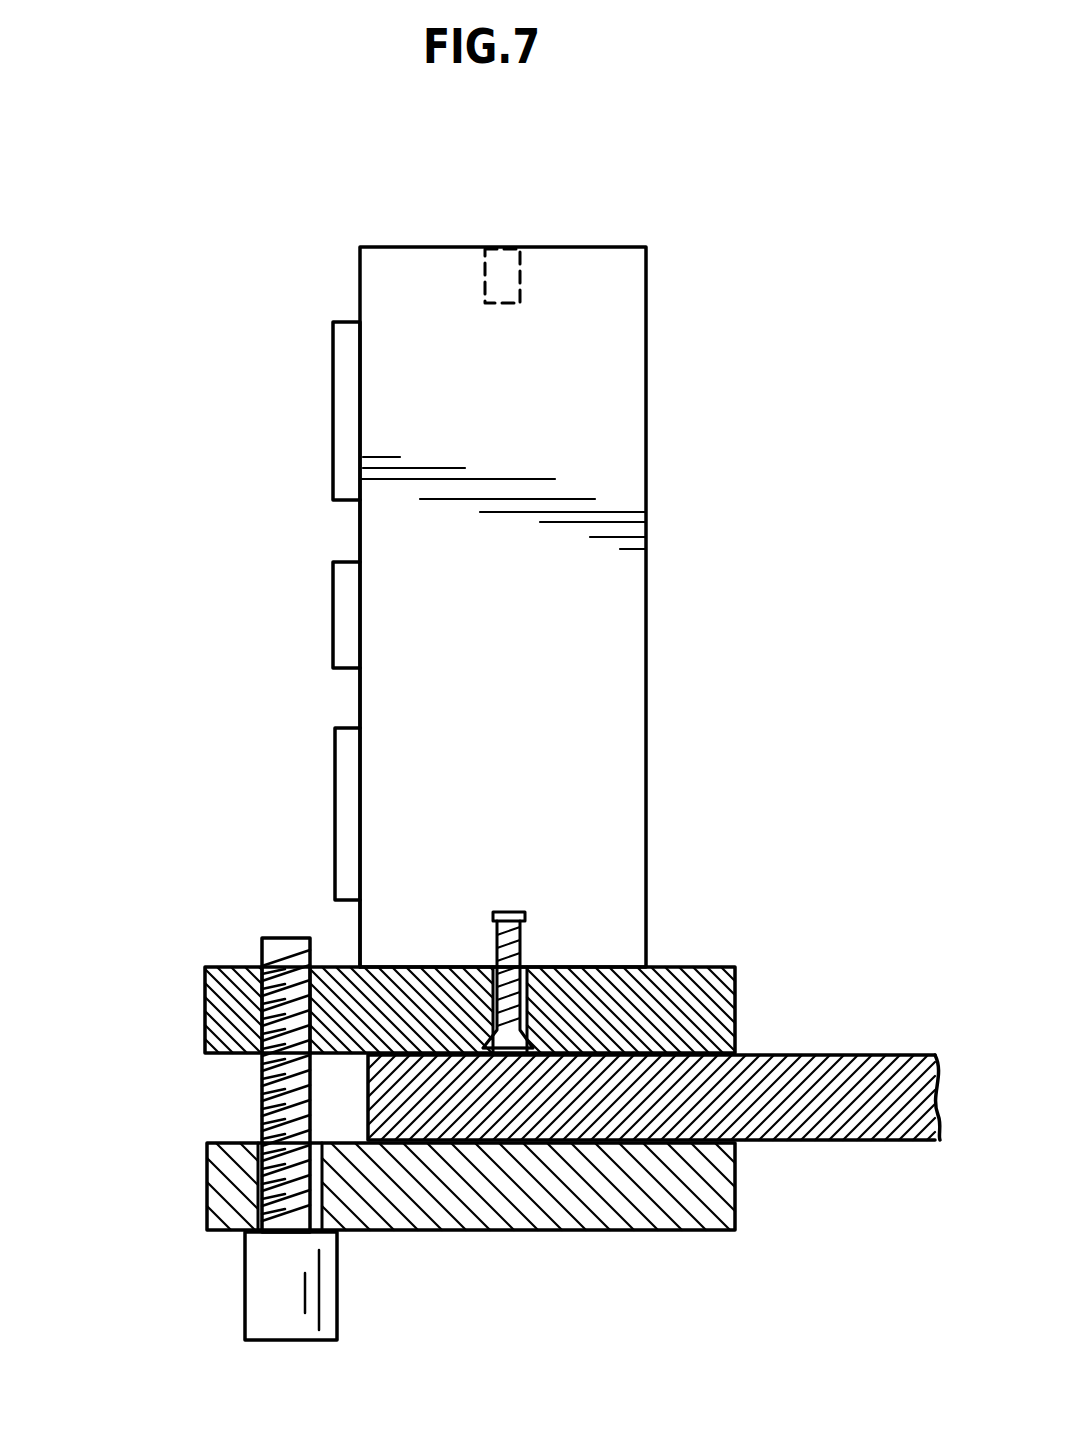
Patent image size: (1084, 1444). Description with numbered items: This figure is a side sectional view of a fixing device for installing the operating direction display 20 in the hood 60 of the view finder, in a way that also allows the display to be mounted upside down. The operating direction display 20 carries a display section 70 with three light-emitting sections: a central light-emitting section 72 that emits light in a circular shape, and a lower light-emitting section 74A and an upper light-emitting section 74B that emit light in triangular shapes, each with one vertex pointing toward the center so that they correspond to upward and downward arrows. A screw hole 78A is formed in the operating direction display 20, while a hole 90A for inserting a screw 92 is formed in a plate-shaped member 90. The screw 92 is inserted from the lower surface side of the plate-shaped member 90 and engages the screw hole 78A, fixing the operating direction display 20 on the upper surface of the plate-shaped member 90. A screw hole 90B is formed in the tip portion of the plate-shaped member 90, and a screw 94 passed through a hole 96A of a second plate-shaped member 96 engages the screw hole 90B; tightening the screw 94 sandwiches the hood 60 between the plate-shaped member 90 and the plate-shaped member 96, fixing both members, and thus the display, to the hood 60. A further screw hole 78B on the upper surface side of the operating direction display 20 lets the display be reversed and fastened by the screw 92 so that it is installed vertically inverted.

The operating direction display 20 is at (598, 630).
The hood 60 is at (870, 1115).
The display section 70 is at (360, 703).
The central light-emitting section 72 is at (333, 615).
The lower light-emitting section 74A is at (335, 818).
The upper light-emitting section 74B is at (333, 418).
The screw hole 78A is at (493, 918).
The screw hole 78B is at (495, 276).
The plate-shaped member 90 is at (735, 985).
The hole 90A is at (528, 964).
The screw hole 90B is at (265, 968).
The screw 92 is at (507, 912).
The screw 94 is at (262, 1090).
The plate-shaped member 96 is at (592, 1195).
The hole 96A is at (265, 1208).